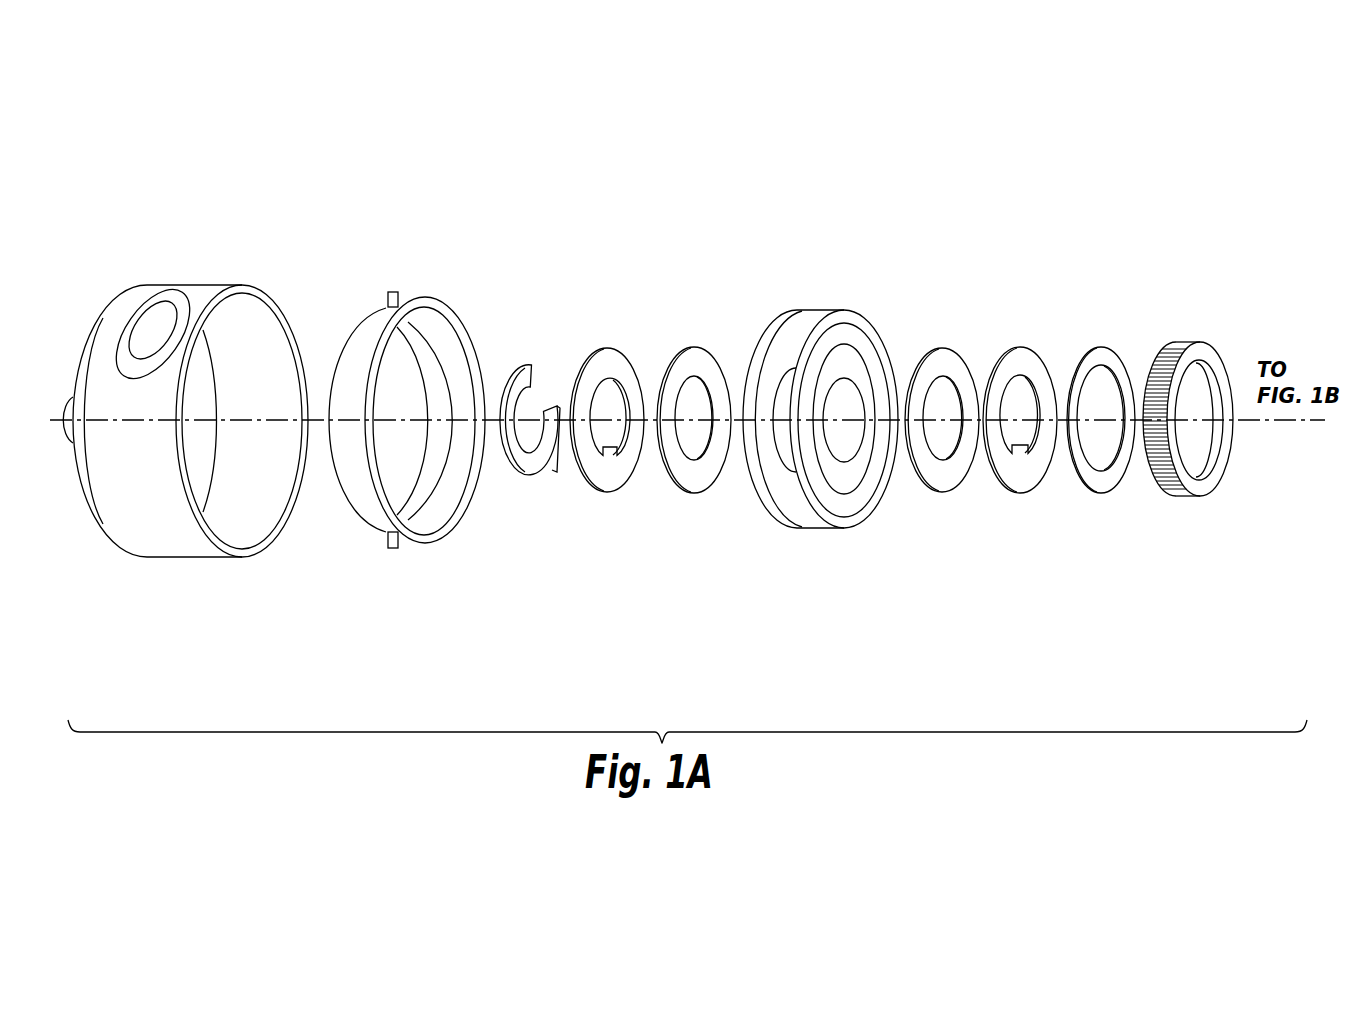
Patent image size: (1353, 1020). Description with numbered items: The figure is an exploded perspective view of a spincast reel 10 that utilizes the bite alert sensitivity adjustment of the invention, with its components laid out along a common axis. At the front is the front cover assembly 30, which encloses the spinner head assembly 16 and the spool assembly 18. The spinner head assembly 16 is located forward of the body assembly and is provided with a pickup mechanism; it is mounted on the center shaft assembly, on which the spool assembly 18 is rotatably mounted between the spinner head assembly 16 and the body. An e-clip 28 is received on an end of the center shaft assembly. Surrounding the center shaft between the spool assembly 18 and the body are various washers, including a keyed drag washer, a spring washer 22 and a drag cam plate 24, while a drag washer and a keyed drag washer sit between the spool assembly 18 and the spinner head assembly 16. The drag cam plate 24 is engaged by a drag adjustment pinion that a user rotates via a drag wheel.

The spincast reel 10 is at (208, 172).
The spinner head assembly 16 is at (420, 300).
The spool assembly 18 is at (802, 317).
The spring washer 22 is at (1102, 350).
The drag cam plate 24 is at (1185, 335).
The e-clip 28 is at (525, 362).
The front cover assembly 30 is at (130, 288).